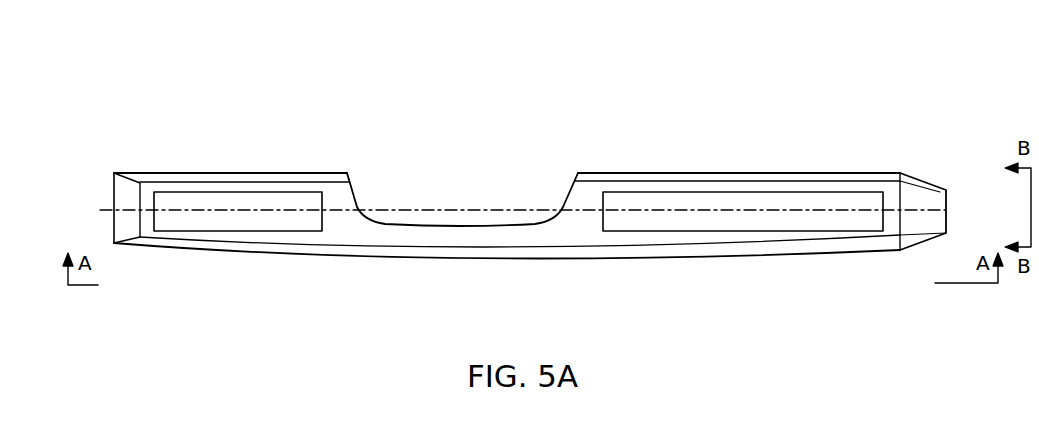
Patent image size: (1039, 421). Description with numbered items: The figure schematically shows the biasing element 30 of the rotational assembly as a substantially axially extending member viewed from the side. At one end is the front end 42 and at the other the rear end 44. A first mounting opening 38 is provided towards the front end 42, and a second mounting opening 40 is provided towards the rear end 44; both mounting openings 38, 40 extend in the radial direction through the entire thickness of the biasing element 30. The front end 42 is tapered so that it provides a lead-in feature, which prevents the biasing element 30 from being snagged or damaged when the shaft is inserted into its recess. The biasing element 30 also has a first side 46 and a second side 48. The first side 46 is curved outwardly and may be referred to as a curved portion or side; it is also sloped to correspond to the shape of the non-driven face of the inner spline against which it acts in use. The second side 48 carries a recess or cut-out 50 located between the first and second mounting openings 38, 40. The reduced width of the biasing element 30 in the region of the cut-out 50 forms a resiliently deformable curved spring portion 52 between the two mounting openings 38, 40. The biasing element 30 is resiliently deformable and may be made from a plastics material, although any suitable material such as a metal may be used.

The biasing element 30 is at (826, 82).
The first mounting opening 38 is at (743, 210).
The second mounting opening 40 is at (213, 206).
The front end 42 is at (923, 182).
The rear end 44 is at (114, 181).
The first side 46 is at (460, 259).
The second side 48 is at (312, 172).
The recess or cut-out 50 is at (450, 198).
The curved spring portion 52 is at (497, 236).